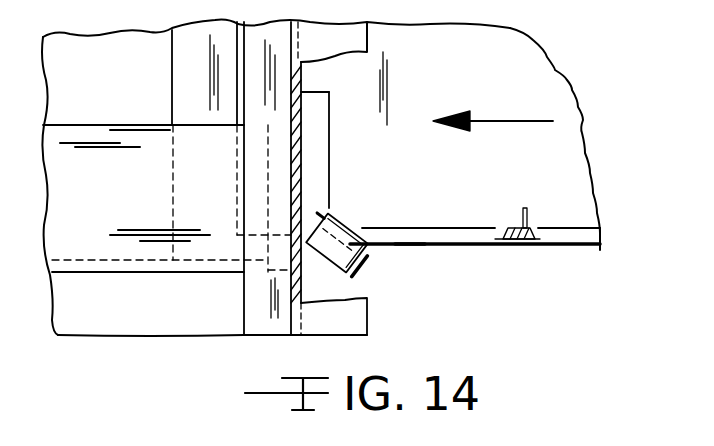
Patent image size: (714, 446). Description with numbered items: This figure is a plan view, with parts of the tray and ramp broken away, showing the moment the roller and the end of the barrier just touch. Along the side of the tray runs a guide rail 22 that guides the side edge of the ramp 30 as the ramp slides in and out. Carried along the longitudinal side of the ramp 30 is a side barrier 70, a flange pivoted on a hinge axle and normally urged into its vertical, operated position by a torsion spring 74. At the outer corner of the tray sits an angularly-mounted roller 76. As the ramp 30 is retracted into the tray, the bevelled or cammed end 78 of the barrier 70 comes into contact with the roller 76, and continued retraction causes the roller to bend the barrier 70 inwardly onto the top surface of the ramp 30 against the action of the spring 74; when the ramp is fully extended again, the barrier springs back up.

The guide rail 22 is at (146, 209).
The ramp 30 is at (462, 88).
The side barrier 70 is at (443, 232).
The torsion spring 74 is at (510, 227).
The angularly-mounted roller 76 is at (346, 220).
The bevelled end 78 is at (408, 246).